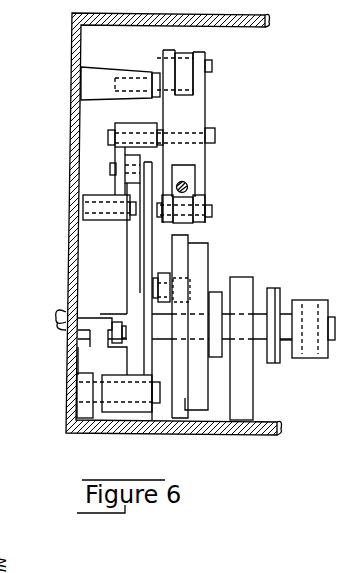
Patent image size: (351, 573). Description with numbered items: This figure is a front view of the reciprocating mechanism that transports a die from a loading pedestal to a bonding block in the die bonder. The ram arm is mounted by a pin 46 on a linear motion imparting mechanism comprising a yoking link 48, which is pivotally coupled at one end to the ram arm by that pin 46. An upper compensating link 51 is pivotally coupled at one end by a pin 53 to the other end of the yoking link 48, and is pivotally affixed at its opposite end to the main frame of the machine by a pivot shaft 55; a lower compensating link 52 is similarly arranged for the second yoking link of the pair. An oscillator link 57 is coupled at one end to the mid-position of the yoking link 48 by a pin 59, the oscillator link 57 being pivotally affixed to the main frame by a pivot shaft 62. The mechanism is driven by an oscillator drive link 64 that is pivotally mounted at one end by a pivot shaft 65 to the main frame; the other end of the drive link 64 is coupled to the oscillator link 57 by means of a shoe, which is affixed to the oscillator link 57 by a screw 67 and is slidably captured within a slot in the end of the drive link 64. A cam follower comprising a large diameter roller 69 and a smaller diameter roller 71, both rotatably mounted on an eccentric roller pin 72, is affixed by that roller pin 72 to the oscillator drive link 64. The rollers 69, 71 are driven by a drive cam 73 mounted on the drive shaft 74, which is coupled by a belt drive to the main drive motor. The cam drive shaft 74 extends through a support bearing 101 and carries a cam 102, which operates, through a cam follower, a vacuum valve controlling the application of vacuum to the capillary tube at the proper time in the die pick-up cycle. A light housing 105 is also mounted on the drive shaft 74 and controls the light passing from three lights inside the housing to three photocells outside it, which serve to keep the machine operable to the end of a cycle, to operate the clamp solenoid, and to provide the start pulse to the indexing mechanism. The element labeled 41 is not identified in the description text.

The pivot pin 41 is at (190, 190).
The pin 46 is at (212, 214).
The yoking link 48 is at (204, 108).
The upper compensating link 51 is at (182, 52).
The lower compensating link 52 is at (120, 304).
The pin 53 is at (212, 64).
The pivot shaft 55 is at (117, 73).
The oscillator link 57 is at (115, 185).
The pin 59 is at (215, 135).
The pivot shaft 62 is at (114, 228).
The oscillator drive link 64 is at (126, 256).
The pivot shaft 65 is at (147, 426).
The screw 67 is at (111, 168).
The large diameter roller 69 is at (168, 272).
The smaller diameter roller 71 is at (190, 282).
The eccentric roller pin 72 is at (140, 278).
The drive cam 73 is at (208, 243).
The drive shaft 74 is at (287, 340).
The support bearing 101 is at (243, 277).
The cam 102 is at (277, 288).
The light housing 105 is at (315, 360).